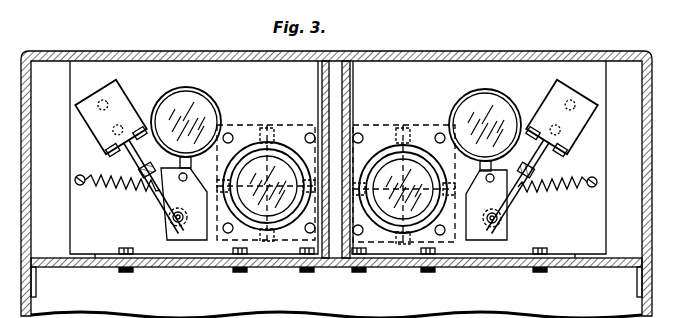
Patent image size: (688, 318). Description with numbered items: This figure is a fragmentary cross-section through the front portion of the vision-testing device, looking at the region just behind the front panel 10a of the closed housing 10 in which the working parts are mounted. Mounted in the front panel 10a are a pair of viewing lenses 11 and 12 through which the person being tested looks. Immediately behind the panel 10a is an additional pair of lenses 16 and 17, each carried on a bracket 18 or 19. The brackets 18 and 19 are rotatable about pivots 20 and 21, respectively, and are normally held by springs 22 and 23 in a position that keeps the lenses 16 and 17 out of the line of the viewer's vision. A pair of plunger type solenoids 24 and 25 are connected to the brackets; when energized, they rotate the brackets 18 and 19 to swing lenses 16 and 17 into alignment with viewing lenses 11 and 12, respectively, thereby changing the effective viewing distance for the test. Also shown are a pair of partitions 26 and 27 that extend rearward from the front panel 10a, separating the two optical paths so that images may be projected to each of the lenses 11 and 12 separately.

The housing 10 is at (448, 52).
The front panel 10a is at (537, 70).
The viewing lens 11 is at (258, 165).
The viewing lens 12 is at (407, 165).
The lens 16 is at (189, 104).
The lens 17 is at (492, 102).
The bracket 18 is at (168, 213).
The bracket 19 is at (513, 212).
The pivot 20 is at (172, 222).
The pivot 21 is at (500, 227).
The spring 22 is at (118, 188).
The spring 23 is at (580, 175).
The plunger type solenoid 24 is at (118, 103).
The plunger type solenoid 25 is at (567, 95).
The partition 26 is at (322, 110).
The partition 27 is at (350, 105).